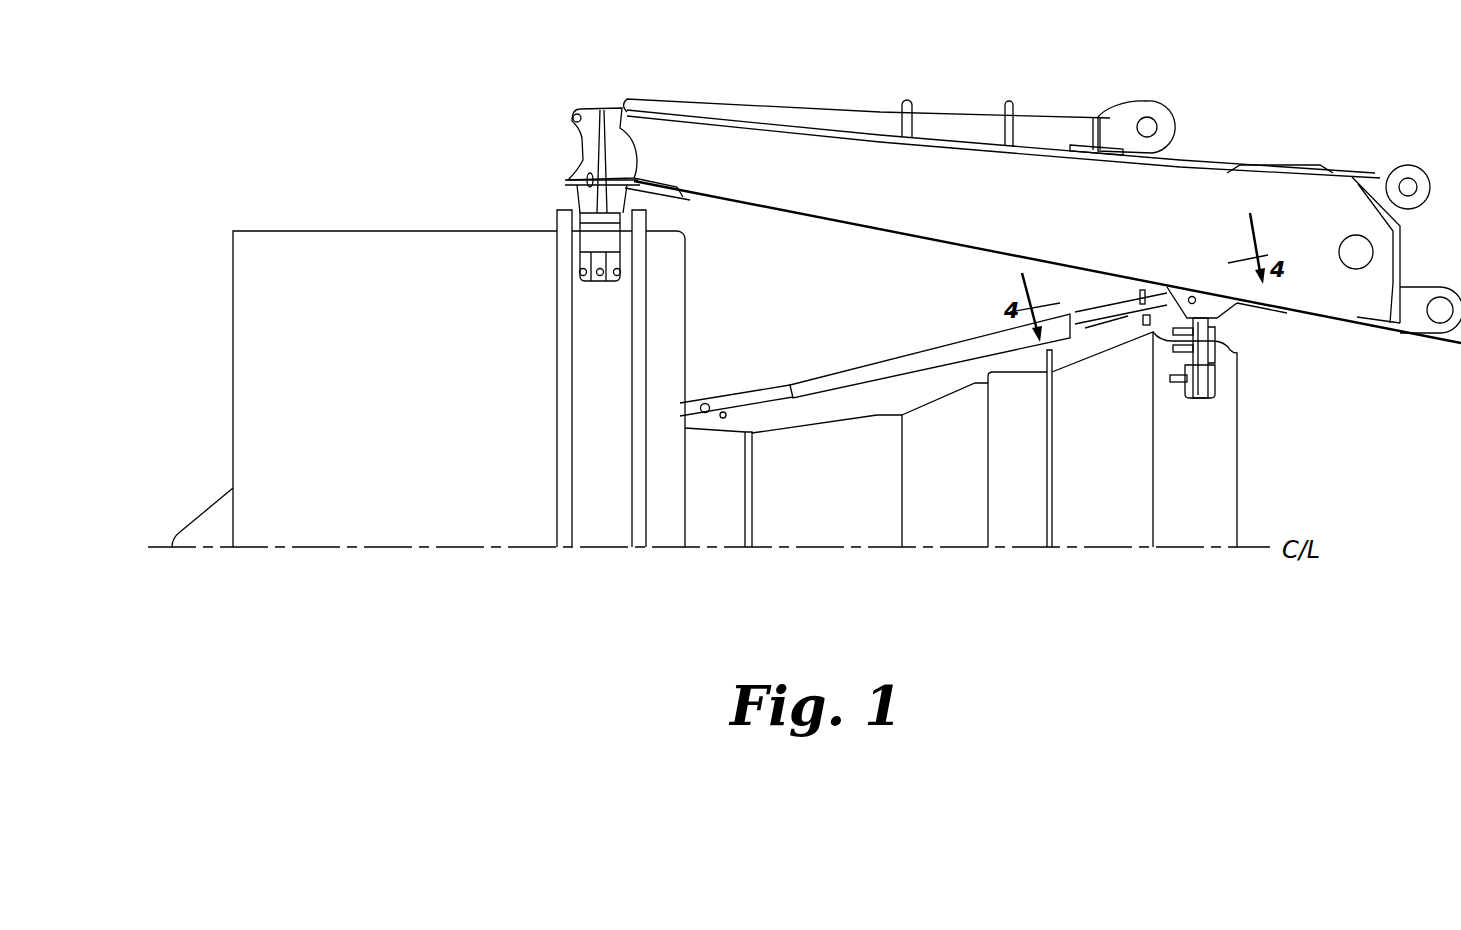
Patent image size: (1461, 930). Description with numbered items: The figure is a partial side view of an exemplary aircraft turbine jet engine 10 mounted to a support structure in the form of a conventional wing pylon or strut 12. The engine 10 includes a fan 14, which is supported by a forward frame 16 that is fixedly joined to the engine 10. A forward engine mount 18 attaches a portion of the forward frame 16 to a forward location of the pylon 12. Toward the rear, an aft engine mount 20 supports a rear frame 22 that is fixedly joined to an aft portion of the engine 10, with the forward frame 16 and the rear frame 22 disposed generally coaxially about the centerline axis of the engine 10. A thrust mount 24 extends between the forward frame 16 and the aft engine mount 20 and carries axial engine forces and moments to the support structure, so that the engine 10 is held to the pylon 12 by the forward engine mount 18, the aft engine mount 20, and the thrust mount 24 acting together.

The aircraft turbine jet engine 10 is at (368, 130).
The pylon or strut 12 is at (846, 140).
The fan 14 is at (482, 218).
The forward frame 16 is at (600, 527).
The forward engine mount 18 is at (560, 194).
The aft engine mount 20 is at (1238, 325).
The rear frame 22 is at (1196, 527).
The thrust mount 24 is at (923, 350).